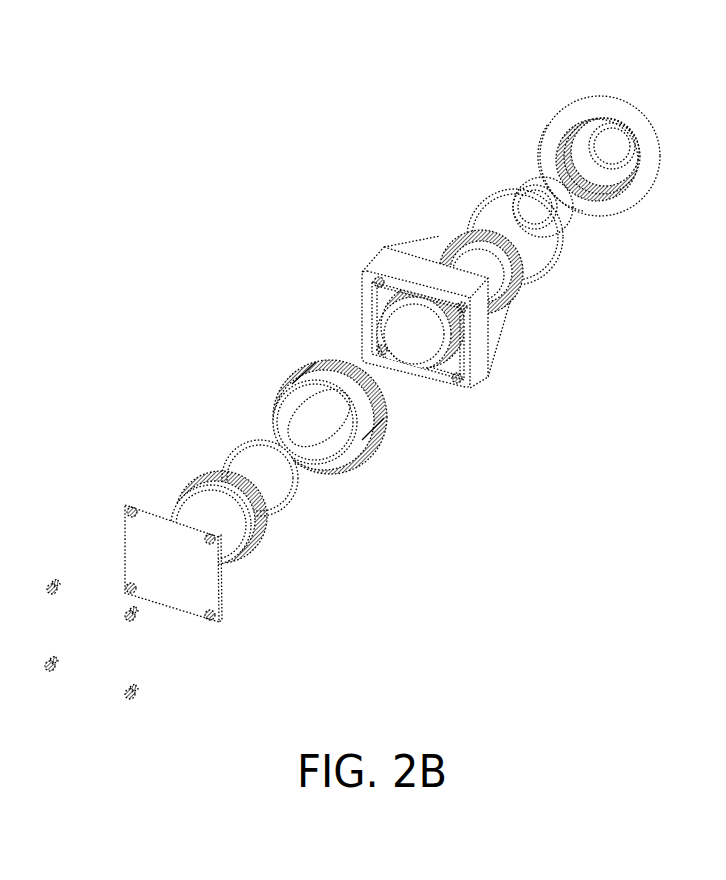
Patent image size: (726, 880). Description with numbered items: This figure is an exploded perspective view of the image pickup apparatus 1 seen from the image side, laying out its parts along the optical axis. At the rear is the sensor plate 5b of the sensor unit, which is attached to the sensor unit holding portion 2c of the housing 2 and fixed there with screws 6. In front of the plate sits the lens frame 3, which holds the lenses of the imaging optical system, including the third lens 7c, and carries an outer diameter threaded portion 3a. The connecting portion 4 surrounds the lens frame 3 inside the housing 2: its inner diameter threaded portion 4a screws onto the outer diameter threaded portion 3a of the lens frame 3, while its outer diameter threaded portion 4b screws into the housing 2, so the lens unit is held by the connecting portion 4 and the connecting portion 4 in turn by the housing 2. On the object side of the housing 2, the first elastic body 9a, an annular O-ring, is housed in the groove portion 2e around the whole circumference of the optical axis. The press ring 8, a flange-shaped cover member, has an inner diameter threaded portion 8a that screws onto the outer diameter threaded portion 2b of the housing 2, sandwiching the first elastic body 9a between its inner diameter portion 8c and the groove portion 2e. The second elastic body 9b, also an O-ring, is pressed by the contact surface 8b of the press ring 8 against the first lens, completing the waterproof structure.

The image pickup apparatus 1 is at (115, 89).
The housing 2 is at (435, 313).
The outer diameter threaded portion 2b is at (453, 230).
The sensor unit holding portion 2c is at (374, 274).
The groove portion 2e is at (512, 307).
The lens frame 3 is at (264, 492).
The outer diameter threaded portion 3a is at (208, 473).
The connecting portion 4 is at (283, 374).
The inner diameter threaded portion 4a is at (269, 412).
The outer diameter threaded portion 4b is at (317, 362).
The sensor plate 5b is at (202, 587).
The screws 6 is at (58, 591).
The third lens 7c is at (221, 524).
The press ring 8 is at (622, 152).
The inner diameter threaded portion 8a is at (628, 189).
The contact surface 8b is at (609, 180).
The inner diameter portion 8c is at (603, 206).
The first elastic body 9a is at (480, 204).
The second elastic body 9b is at (530, 184).